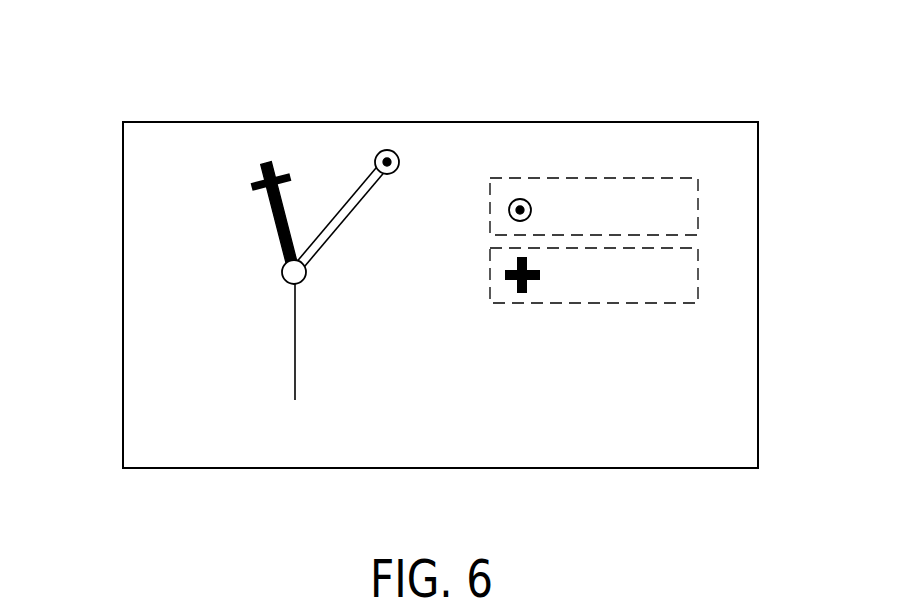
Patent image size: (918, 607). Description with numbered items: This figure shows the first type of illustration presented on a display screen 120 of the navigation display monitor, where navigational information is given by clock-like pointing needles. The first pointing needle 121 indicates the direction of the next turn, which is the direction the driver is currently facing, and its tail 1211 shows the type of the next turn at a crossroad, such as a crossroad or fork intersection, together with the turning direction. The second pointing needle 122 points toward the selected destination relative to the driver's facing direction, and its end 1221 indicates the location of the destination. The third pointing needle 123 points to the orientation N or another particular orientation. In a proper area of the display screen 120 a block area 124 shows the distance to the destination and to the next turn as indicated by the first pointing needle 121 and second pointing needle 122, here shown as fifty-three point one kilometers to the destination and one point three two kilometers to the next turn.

The display screen 120 is at (765, 273).
The first pointing needle 121 is at (272, 224).
The tail of the first pointing needle 1211 is at (257, 178).
The second pointing needle 122 is at (352, 197).
The end of the second pointing needle 1221 is at (398, 150).
The third pointing needle 123 is at (290, 340).
The block area 124 is at (688, 254).